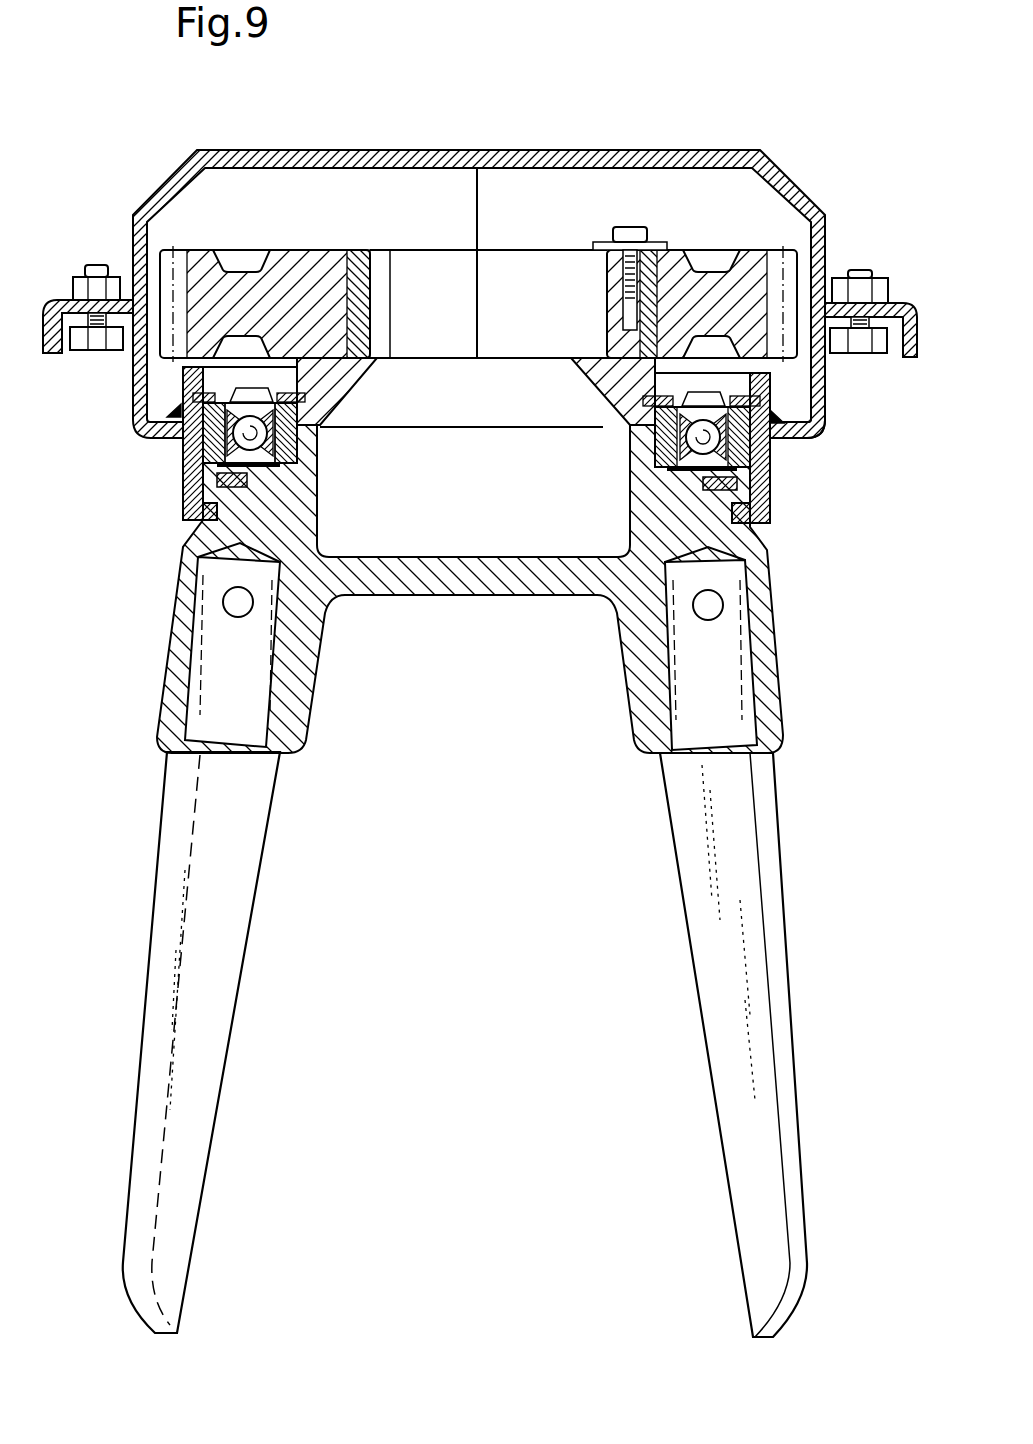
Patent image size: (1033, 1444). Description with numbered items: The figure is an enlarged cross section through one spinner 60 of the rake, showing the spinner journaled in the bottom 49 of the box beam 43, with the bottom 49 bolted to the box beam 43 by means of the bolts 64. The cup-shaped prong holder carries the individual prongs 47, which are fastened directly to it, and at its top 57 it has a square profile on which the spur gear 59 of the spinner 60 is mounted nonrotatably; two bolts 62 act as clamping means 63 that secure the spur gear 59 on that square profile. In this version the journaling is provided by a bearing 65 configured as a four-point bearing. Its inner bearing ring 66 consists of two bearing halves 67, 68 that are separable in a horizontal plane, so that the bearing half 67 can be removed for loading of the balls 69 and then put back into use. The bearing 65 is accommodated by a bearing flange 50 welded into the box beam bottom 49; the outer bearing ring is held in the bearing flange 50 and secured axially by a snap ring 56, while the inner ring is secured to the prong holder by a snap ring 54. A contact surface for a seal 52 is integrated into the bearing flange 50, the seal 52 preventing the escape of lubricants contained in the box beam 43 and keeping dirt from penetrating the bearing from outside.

The box beam 43 is at (777, 170).
The prongs 47 is at (230, 957).
The bottom of the box beam 49 is at (815, 392).
The bearing flange 50 is at (758, 475).
The seal 52 is at (243, 483).
The snap ring 54 is at (303, 395).
The snap ring 56 is at (193, 399).
The top of the prong holder 57 is at (412, 245).
The spur gear 59 is at (323, 252).
The spinner 60 is at (432, 881).
The bolts 62 is at (634, 230).
The clamping means 63 is at (624, 238).
The bolts 64 is at (872, 276).
The bearing 65 is at (203, 460).
The inner bearing ring 66 is at (280, 462).
The bearing half 67 is at (299, 418).
The bearing half 68 is at (297, 442).
The balls 69 is at (203, 506).